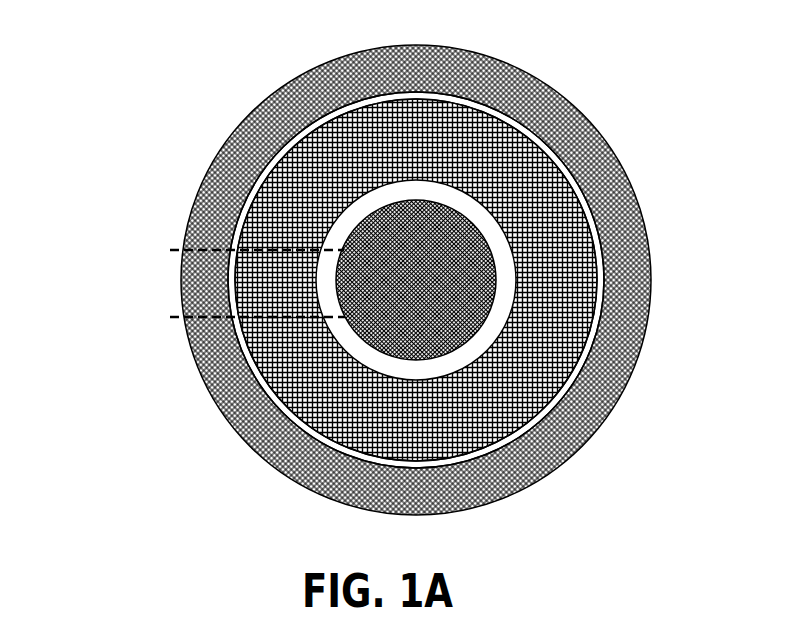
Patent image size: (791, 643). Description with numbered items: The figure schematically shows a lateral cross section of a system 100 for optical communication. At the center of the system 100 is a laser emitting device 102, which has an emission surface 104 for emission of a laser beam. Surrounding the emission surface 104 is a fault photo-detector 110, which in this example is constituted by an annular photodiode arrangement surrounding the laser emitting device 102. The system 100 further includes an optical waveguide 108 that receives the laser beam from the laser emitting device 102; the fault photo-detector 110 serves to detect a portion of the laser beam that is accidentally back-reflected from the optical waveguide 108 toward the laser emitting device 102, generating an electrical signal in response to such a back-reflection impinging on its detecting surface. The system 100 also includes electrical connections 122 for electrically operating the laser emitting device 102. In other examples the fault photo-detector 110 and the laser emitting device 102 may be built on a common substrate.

The system for optical communication 100 is at (135, 105).
The laser emitting device 102 is at (353, 330).
The emission surface 104 is at (452, 322).
The optical waveguide 108 is at (638, 303).
The fault photo-detector 110 is at (493, 112).
The electrical connections 122 is at (175, 251).